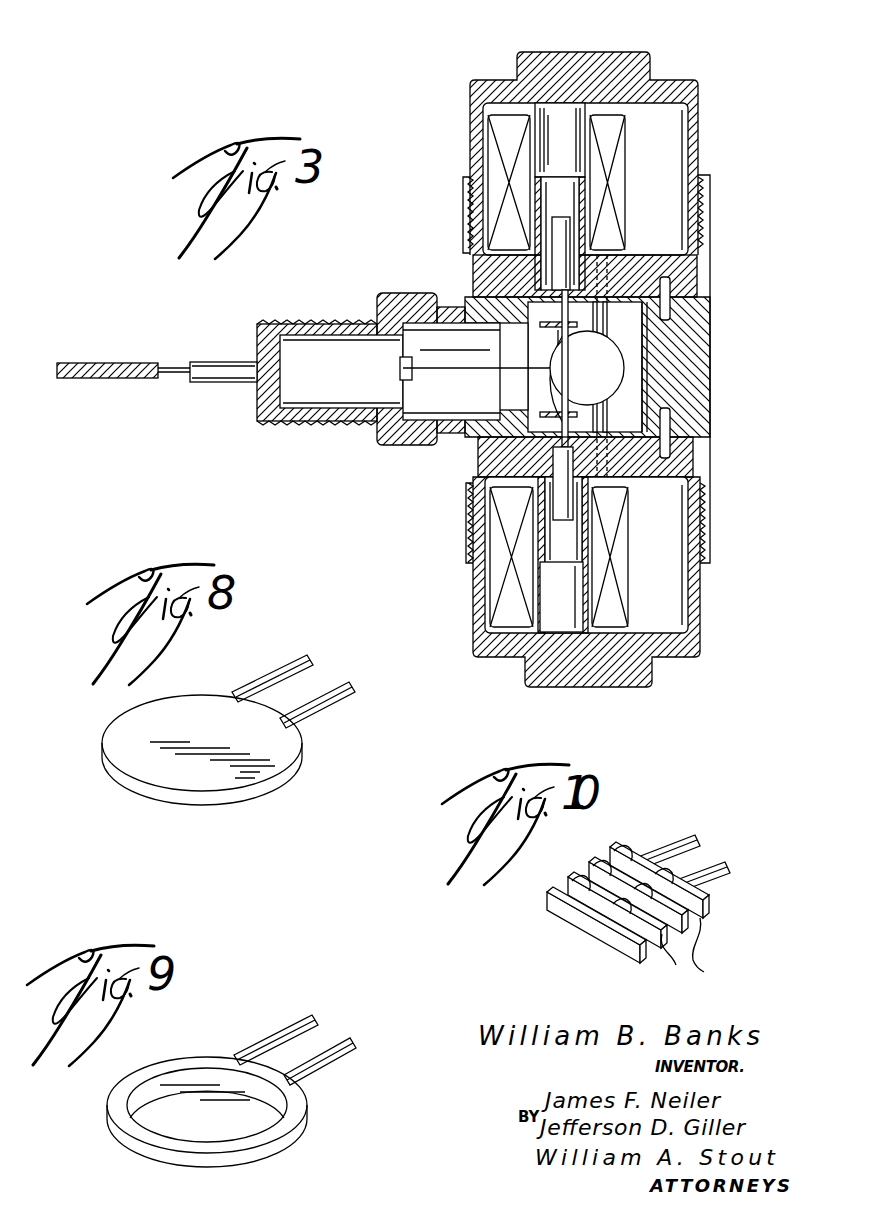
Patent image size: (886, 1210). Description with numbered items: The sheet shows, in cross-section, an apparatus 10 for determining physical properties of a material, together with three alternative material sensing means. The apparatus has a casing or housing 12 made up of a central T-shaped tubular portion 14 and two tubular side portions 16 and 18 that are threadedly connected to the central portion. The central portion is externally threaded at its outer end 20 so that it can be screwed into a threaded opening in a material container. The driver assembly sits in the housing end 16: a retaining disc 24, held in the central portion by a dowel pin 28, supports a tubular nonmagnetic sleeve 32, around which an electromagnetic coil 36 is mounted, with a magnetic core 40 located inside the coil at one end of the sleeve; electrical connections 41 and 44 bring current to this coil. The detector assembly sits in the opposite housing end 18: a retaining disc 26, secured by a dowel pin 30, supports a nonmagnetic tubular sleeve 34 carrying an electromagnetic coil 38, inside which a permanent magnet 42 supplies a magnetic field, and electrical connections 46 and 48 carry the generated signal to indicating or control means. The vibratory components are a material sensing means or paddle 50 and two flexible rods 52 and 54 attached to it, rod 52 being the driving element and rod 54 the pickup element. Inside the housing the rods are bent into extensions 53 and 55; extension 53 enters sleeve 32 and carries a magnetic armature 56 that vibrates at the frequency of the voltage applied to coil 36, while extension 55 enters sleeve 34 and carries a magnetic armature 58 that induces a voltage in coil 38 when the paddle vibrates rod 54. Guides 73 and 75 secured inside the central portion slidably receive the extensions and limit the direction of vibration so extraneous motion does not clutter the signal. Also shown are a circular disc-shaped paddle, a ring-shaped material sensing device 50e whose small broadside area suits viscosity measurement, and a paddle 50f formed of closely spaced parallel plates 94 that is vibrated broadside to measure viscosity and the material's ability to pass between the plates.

In FIG. 3, the apparatus 10 is at (712, 257).
In FIG. 3, the casing or housing 12 is at (712, 312).
In FIG. 3, the central T-shaped tubular portion 14 is at (712, 378).
In FIG. 3, the tubular side portion (housing end) 16 is at (700, 632).
In FIG. 3, the tubular side portion (housing end) 18 is at (690, 93).
In FIG. 3, the outer end 20 is at (285, 322).
In FIG. 3, the retaining disc 24 is at (690, 458).
In FIG. 3, the retaining disc 26 is at (480, 268).
In FIG. 3, the dowel pin 28 is at (672, 428).
In FIG. 3, the dowel pin 30 is at (672, 290).
In FIG. 3, the tubular nonmagnetic sleeve 32 is at (588, 545).
In FIG. 3, the nonmagnetic tubular sleeve 34 is at (535, 185).
In FIG. 3, the electromagnetic coil 36 is at (626, 565).
In FIG. 3, the electromagnetic coil 38 is at (488, 150).
In FIG. 3, the magnetic core 40 is at (580, 590).
In FIG. 3, the electrical connection 41 is at (608, 410).
In FIG. 3, the permanent magnet 42 is at (560, 110).
In FIG. 3, the electrical connection 44 is at (607, 421).
In FIG. 3, the electrical connection 46 is at (600, 307).
In FIG. 3, the electrical connection 48 is at (607, 330).
In FIG. 3, the material sensing means or paddle 50 is at (95, 363).
In FIG. 9, the material sensing device 50e is at (115, 1100).
In FIG. 10, the paddle 50f is at (545, 895).
In FIG. 9, the flexible vibratory element or rod (driving element) 52 is at (293, 1018).
In FIG. 10, the flexible vibratory element or rod (driving element) 52 is at (680, 855).
In FIG. 3, the extension 53 is at (570, 383).
In FIG. 3, the flexible vibratory element or rod (pickup or detector element) 54 is at (425, 372).
In FIG. 9, the flexible vibratory element or rod (pickup or detector element) 54 is at (335, 1078).
In FIG. 10, the flexible vibratory element or rod (pickup or detector element) 54 is at (718, 890).
In FIG. 3, the extension 55 is at (567, 357).
In FIG. 3, the magnetic armature 56 is at (580, 510).
In FIG. 3, the magnetic armature 58 is at (562, 215).
In FIG. 3, the guide 73 is at (550, 415).
In FIG. 3, the guide 75 is at (575, 322).
In FIG. 10, the parallel plates 94 is at (680, 966).